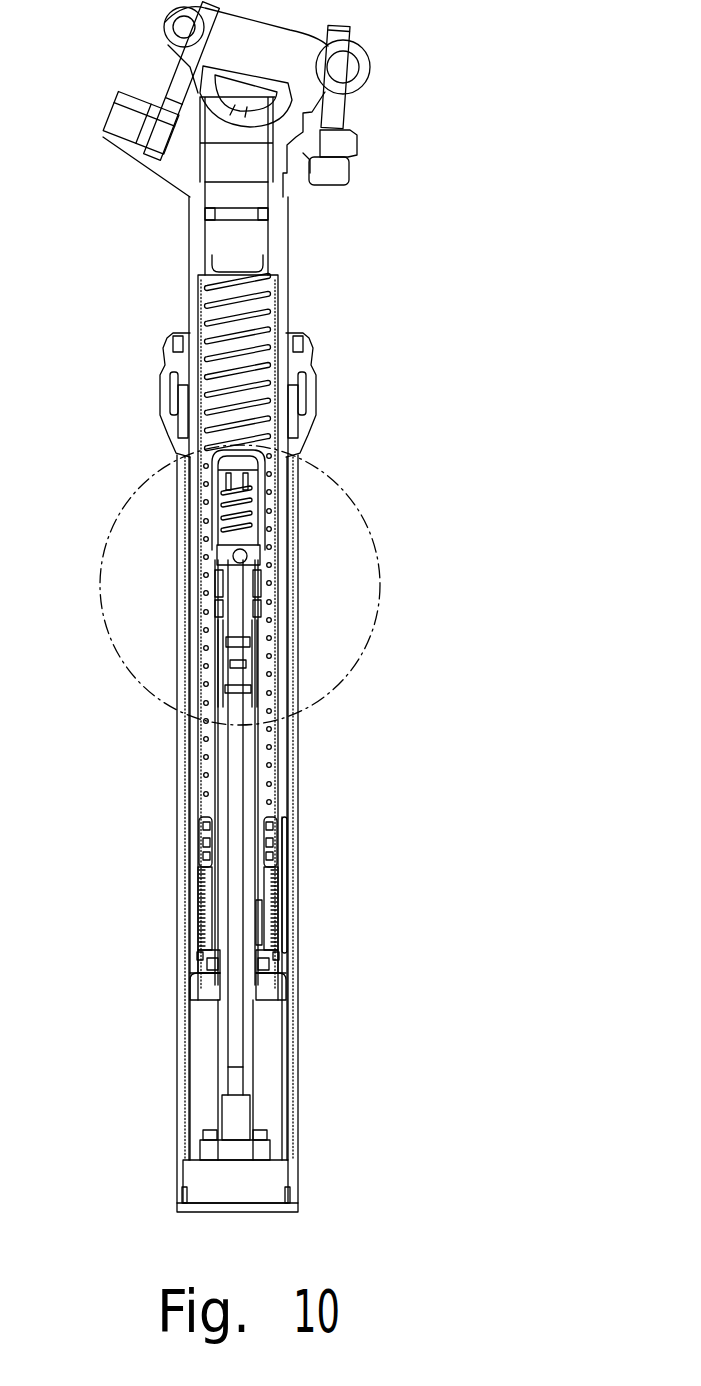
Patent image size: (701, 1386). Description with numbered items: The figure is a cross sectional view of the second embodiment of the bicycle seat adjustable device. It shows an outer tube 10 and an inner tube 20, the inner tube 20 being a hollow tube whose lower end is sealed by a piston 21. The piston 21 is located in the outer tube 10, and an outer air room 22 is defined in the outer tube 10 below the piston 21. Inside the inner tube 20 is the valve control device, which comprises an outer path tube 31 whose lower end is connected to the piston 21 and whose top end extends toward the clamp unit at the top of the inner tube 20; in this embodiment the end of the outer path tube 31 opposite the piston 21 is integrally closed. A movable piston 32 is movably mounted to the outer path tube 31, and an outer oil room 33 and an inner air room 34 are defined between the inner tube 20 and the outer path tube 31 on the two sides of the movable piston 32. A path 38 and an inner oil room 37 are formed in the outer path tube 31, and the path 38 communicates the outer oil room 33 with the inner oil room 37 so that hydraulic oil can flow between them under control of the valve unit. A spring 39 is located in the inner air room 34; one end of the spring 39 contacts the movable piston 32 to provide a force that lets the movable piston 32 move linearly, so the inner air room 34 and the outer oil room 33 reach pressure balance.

The outer tube 10 is at (180, 1047).
The inner tube 20 is at (190, 955).
The piston 21 is at (193, 992).
The outer air room 22 is at (270, 1092).
The outer path tube 31 is at (213, 903).
The movable piston 32 is at (203, 855).
The outer oil room 33 is at (270, 893).
The inner air room 34 is at (267, 302).
The inner oil room 37 is at (247, 468).
The path 38 is at (258, 923).
The spring 39 is at (223, 318).